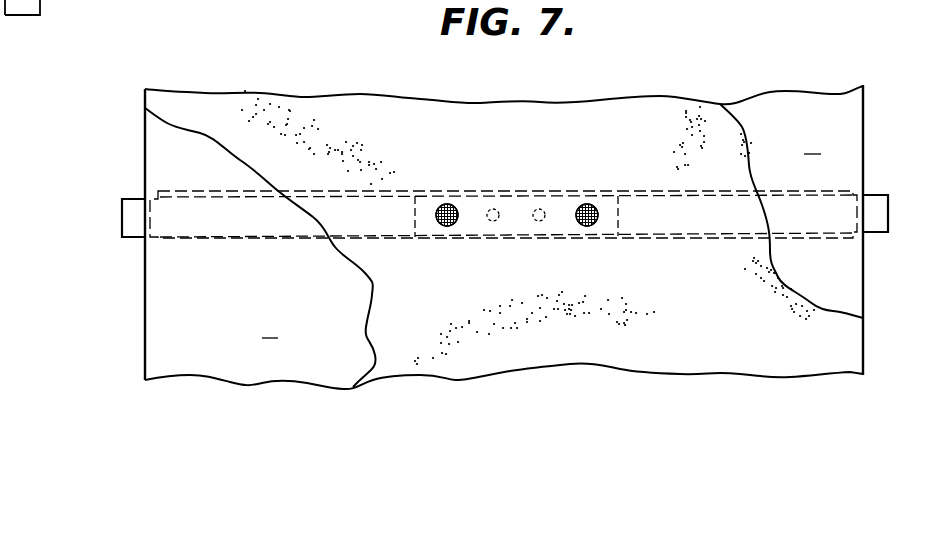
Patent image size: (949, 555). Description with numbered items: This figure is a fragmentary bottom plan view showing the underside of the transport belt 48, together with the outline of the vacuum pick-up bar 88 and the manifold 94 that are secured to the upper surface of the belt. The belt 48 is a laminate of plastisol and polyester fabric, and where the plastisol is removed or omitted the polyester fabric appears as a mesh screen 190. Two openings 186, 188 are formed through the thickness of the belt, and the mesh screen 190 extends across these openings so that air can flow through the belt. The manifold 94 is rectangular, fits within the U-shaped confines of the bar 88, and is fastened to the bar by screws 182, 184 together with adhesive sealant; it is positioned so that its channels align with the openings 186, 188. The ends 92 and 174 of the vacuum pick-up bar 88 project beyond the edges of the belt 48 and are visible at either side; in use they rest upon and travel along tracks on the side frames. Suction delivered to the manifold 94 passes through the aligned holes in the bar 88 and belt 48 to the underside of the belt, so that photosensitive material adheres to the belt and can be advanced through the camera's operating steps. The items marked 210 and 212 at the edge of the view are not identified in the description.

The transport belt 48 is at (762, 342).
The vacuum pick-up bar 88 is at (697, 209).
The end of vacuum pick-up bar 92 is at (122, 218).
The manifold 94 is at (528, 197).
The opposite end of vacuum bar 174 is at (878, 212).
The screw 182 is at (539, 221).
The screw 184 is at (489, 221).
The opening 186 is at (445, 226).
The opening 188 is at (591, 226).
The mesh screen 190 is at (448, 204).
The adjacent figure element 210 is at (45, 0).
The adjacent figure element 212 is at (5, 15).